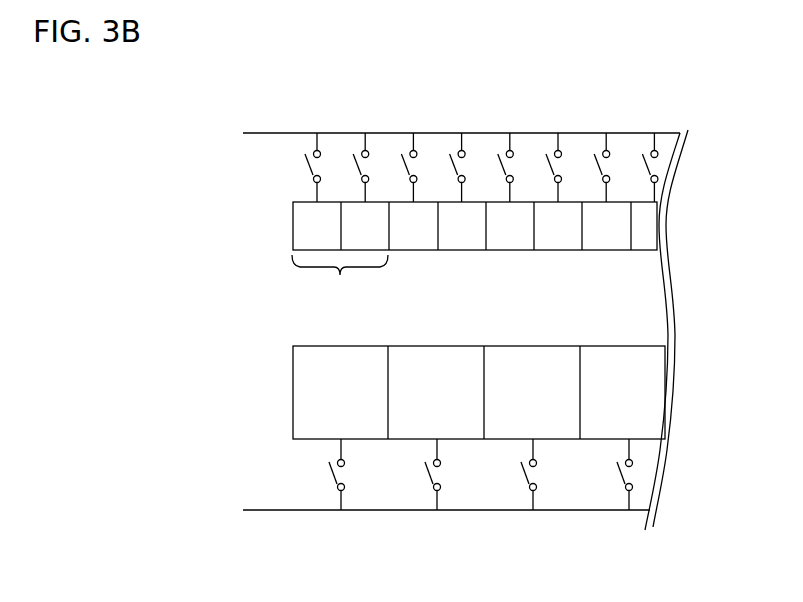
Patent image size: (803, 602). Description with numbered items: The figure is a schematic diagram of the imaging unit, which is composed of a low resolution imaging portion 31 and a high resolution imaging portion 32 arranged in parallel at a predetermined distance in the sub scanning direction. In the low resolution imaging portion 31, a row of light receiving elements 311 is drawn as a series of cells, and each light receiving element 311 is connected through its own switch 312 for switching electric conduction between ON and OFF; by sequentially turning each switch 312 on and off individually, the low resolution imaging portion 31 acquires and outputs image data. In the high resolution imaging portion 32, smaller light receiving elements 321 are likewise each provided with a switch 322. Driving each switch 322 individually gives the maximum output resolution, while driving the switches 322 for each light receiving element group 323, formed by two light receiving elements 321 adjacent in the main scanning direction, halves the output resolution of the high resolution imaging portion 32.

The low resolution imaging portion 31 is at (442, 412).
The light receiving element 311 is at (342, 346).
The switch 312 is at (445, 474).
The high resolution imaging portion 32 is at (421, 219).
The light receiving element 321 is at (292, 242).
The switch 322 is at (303, 170).
The light receiving element group 323 is at (340, 280).